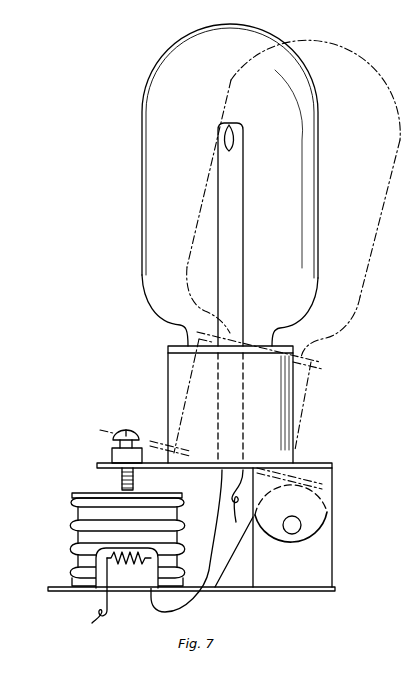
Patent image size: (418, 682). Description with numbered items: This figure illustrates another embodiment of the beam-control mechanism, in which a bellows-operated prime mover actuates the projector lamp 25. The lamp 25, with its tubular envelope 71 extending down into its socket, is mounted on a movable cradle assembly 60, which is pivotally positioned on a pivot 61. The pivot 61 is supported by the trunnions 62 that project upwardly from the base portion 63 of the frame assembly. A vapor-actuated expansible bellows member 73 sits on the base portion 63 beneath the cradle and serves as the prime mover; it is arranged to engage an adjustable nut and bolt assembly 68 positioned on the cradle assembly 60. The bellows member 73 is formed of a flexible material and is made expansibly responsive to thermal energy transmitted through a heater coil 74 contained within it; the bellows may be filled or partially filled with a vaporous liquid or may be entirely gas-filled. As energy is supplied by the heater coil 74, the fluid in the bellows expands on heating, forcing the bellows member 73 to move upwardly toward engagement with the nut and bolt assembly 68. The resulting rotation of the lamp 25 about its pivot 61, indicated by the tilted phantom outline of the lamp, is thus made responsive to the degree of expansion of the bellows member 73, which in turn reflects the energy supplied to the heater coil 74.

The projector lamp 25 is at (143, 110).
The tube 71 is at (243, 165).
The movable cradle assembly 60 is at (97, 463).
The adjustable nut and bolt assembly 68 is at (127, 431).
The expansible bellows member 73 is at (70, 530).
The heater coil 74 is at (121, 587).
The pivot 61 is at (302, 524).
The trunnions 62 is at (326, 572).
The base portion 63 is at (336, 591).